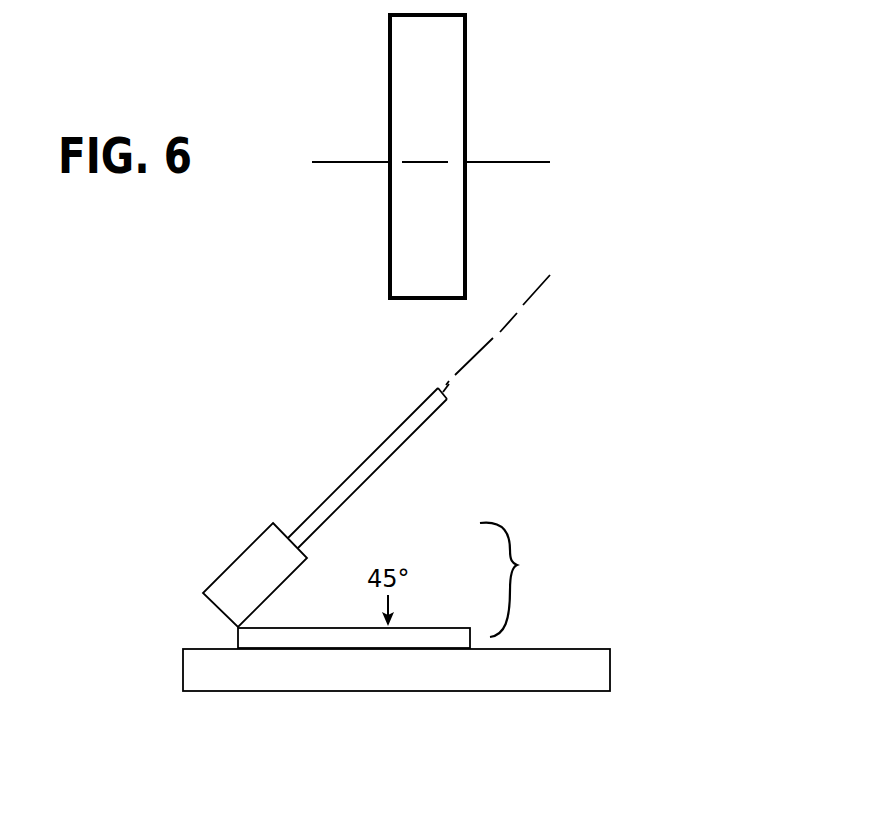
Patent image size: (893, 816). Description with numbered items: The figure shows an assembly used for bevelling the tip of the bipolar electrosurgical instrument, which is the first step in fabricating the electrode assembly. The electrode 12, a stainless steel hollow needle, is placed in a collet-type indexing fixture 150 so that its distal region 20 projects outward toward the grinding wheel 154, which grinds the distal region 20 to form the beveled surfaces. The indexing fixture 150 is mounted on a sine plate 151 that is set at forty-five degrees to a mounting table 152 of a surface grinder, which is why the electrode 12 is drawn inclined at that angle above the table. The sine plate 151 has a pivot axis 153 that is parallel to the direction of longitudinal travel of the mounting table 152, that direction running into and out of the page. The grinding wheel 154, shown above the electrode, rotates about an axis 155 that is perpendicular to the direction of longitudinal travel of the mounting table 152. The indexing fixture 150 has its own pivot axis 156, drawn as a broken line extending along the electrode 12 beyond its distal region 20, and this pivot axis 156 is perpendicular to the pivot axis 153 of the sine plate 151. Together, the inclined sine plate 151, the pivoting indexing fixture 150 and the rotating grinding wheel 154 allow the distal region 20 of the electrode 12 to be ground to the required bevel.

The electrode 12 is at (432, 449).
The distal region 20 is at (456, 410).
The collet-type indexing fixture 150 is at (228, 534).
The sine plate 151 is at (530, 580).
The mounting table 152 is at (631, 682).
The pivot axis of sine plate 153 is at (224, 632).
The grinding wheel 154 is at (488, 60).
The axis of grinding wheel 155 is at (531, 170).
The pivot axis of indexing fixture 156 is at (536, 302).